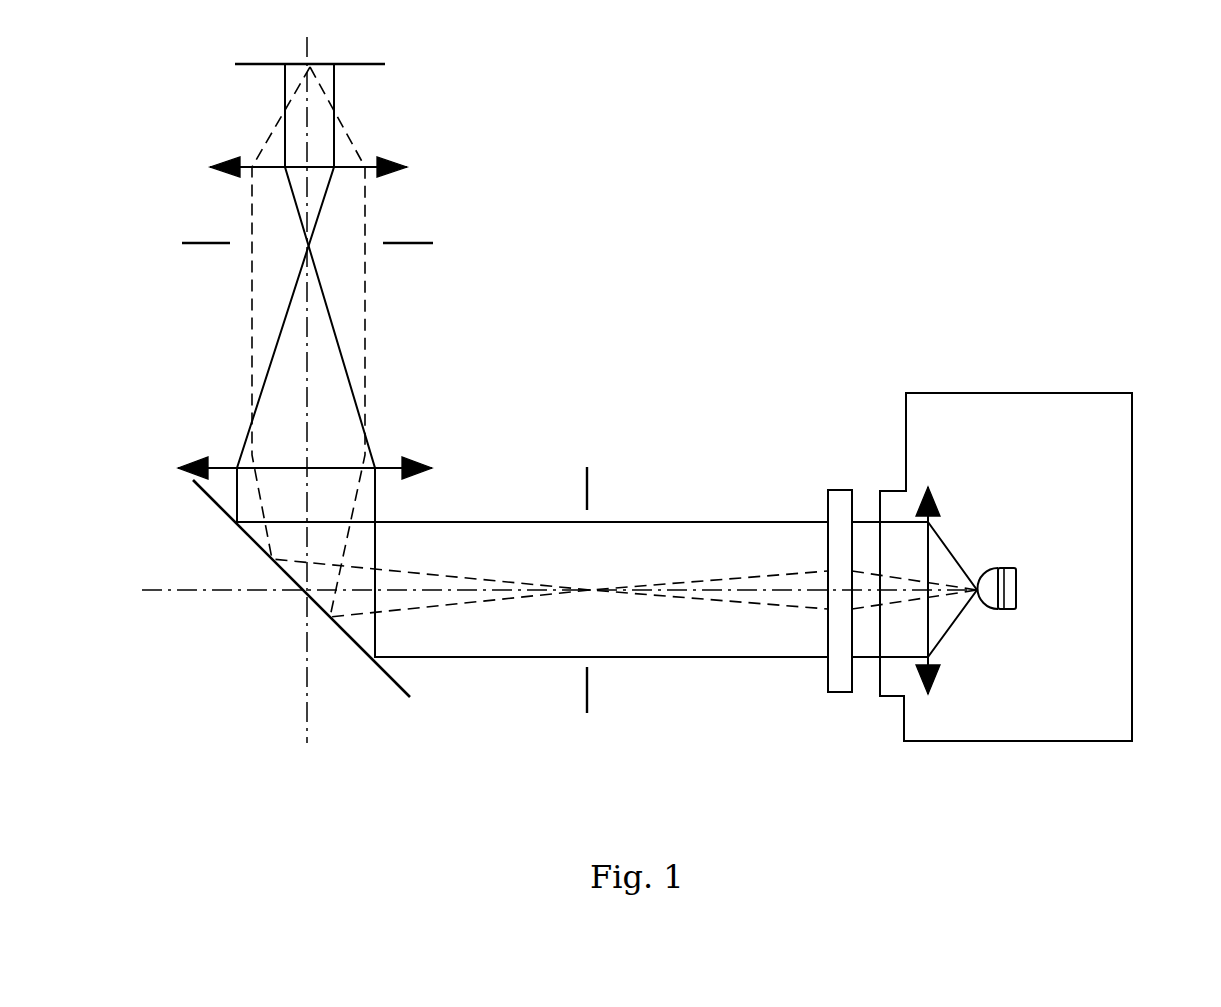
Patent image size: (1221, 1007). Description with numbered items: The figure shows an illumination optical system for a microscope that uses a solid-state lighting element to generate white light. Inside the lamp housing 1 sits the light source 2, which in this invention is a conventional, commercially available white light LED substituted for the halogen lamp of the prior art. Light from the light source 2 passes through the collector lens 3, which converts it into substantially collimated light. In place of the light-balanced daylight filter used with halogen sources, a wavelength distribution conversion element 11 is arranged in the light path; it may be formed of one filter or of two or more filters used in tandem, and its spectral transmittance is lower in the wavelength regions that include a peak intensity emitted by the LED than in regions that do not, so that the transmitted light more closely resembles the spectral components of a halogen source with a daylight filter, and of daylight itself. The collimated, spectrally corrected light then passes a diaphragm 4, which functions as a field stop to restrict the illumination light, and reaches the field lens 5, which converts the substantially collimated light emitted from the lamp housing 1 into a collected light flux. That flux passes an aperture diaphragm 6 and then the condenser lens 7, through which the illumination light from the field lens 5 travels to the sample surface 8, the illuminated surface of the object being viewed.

The lamp housing 1 is at (995, 393).
The light source 2 is at (1002, 568).
The collector lens 3 is at (917, 530).
The diaphragm 4 is at (587, 478).
The field lens 5 is at (383, 468).
The aperture diaphragm 6 is at (407, 243).
The condenser lens 7 is at (372, 167).
The sample surface 8 is at (362, 64).
The wavelength distribution conversion element 11 is at (840, 488).